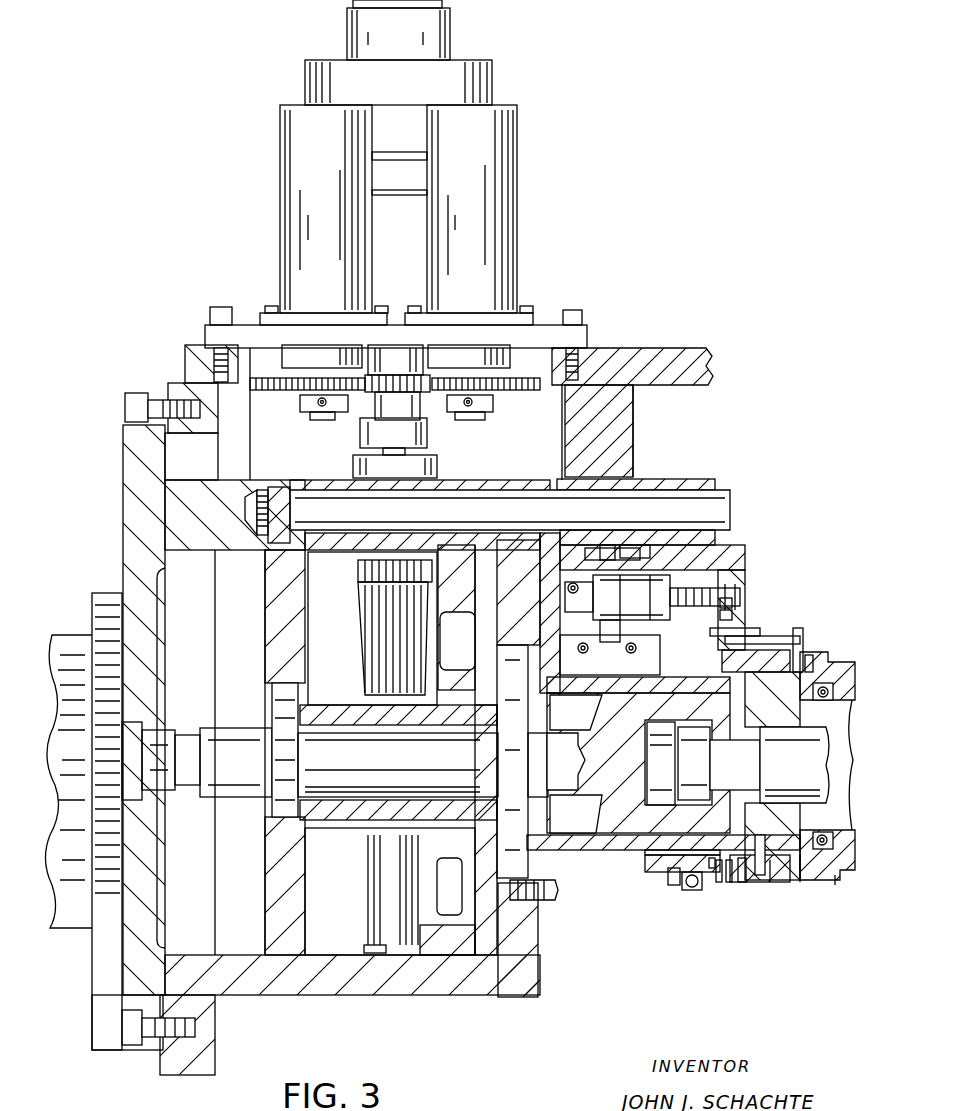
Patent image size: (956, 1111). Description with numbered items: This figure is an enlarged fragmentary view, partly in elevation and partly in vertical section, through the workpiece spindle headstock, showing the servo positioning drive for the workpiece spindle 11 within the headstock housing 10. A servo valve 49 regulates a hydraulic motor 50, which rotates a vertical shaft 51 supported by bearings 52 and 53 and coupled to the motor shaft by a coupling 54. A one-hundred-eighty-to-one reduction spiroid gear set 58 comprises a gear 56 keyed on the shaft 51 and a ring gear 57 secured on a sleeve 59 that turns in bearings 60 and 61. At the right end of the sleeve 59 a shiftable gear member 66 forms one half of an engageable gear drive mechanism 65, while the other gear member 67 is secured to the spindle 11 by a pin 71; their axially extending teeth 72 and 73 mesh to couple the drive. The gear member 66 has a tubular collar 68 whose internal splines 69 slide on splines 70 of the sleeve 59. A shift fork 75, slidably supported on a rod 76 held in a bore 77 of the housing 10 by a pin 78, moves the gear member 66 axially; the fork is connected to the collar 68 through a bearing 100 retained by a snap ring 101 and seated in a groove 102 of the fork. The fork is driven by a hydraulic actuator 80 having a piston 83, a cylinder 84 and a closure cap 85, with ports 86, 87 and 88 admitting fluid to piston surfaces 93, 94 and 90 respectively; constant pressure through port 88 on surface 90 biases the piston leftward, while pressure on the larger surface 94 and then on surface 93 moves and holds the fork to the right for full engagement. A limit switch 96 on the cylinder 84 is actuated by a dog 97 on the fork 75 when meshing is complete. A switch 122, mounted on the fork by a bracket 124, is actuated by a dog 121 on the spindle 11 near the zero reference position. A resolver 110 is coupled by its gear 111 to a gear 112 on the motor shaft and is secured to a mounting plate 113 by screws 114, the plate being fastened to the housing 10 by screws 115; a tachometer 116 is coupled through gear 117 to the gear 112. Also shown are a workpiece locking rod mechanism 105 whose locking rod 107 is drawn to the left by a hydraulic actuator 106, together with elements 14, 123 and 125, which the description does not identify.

The headstock housing 10 is at (692, 360).
The workpiece spindle 11 is at (800, 884).
The support 14 is at (838, 886).
The servo valve 49 is at (432, 40).
The hydraulic motor 50 is at (413, 236).
The vertical shaft 51 is at (385, 835).
The bearing 52 is at (437, 470).
The bearing 53 is at (372, 945).
The coupling 54 is at (380, 408).
The gear 56 is at (362, 622).
The ring gear 57 is at (462, 596).
The spiroid gear set 58 is at (415, 580).
The sleeve 59 is at (548, 845).
The bearing 60 is at (282, 698).
The bearing 61 is at (520, 903).
The gear drive mechanism 65 is at (729, 885).
The shiftable gear member 66 is at (718, 885).
The gear member 67 is at (760, 878).
The tubular collar 68 is at (650, 875).
The internal splines 69 is at (646, 855).
The splines 70 is at (766, 800).
The pin 71 is at (775, 884).
The teeth 72 is at (712, 870).
The teeth 73 is at (742, 885).
The shift fork 75 is at (703, 485).
The rod 76 is at (726, 510).
The bore 77 is at (262, 500).
The pin 78 is at (282, 487).
The hydraulic actuator 80 is at (695, 545).
The piston 83 is at (652, 597).
The cylinder 84 is at (558, 555).
The closure cap 85 is at (712, 582).
The port 86 is at (556, 562).
The port 87 is at (588, 693).
The port 88 is at (660, 698).
The piston surface 90 is at (630, 653).
The piston surface 93 is at (576, 650).
The piston surface 94 is at (608, 642).
The limit switch 96 is at (605, 555).
The dog 97 is at (632, 555).
The bearing 100 is at (694, 890).
The snap ring 101 is at (672, 888).
The groove 102 is at (735, 630).
The workpiece locking rod mechanism 105 is at (592, 801).
The hydraulic actuator 106 is at (72, 635).
The workpiece locking rod 107 is at (703, 763).
The resolver 110 is at (487, 115).
The gear 111 is at (522, 392).
The gear 112 is at (425, 385).
The mounting plate 113 is at (582, 325).
The screws 114 is at (270, 306).
The screws 115 is at (218, 310).
The tachometer 116 is at (300, 112).
The gear 117 is at (276, 390).
The switch actuating dog 121 is at (798, 630).
The switch 122 is at (765, 638).
The block 123 is at (809, 658).
The bracket 124 is at (727, 598).
The part 125 is at (728, 612).